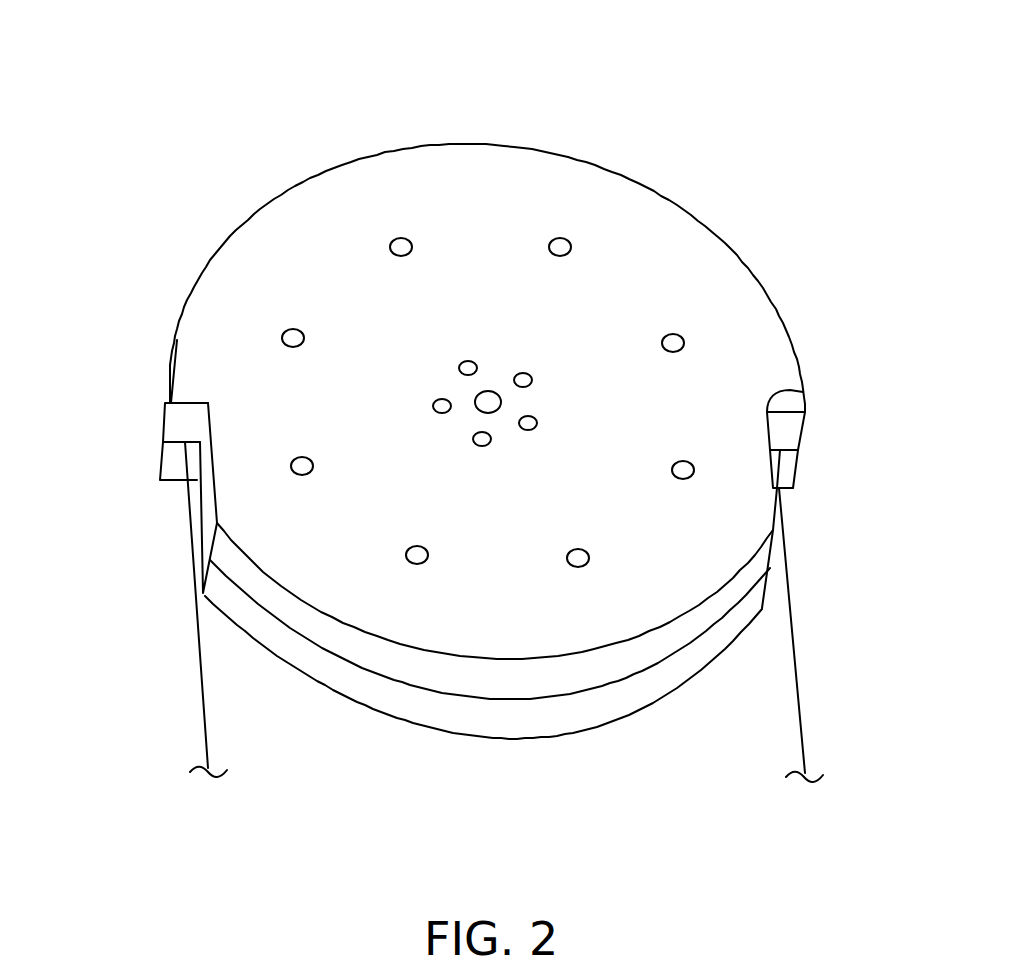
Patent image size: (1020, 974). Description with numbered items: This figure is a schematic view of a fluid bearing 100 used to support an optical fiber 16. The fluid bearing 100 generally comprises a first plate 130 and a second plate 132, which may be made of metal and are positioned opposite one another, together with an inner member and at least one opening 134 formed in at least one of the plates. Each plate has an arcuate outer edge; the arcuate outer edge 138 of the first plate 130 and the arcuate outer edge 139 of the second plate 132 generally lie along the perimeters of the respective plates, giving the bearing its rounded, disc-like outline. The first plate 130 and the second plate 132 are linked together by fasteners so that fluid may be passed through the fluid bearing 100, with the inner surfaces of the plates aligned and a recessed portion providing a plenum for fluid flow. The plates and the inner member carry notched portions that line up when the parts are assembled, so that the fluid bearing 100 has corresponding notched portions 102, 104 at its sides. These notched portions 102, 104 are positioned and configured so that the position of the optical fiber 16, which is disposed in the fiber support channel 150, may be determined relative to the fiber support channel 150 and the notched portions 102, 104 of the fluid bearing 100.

The fluid bearing 100 is at (620, 118).
The first plate 130 is at (190, 256).
The second plate 132 is at (415, 745).
The opening 134 is at (490, 392).
The arcuate outer edge 138 is at (643, 660).
The arcuate outer edge 139 is at (563, 722).
The notched portion 102 is at (207, 403).
The notched portion 104 is at (803, 388).
The fiber support channel 150 is at (163, 425).
The optical fiber 16 is at (181, 703).